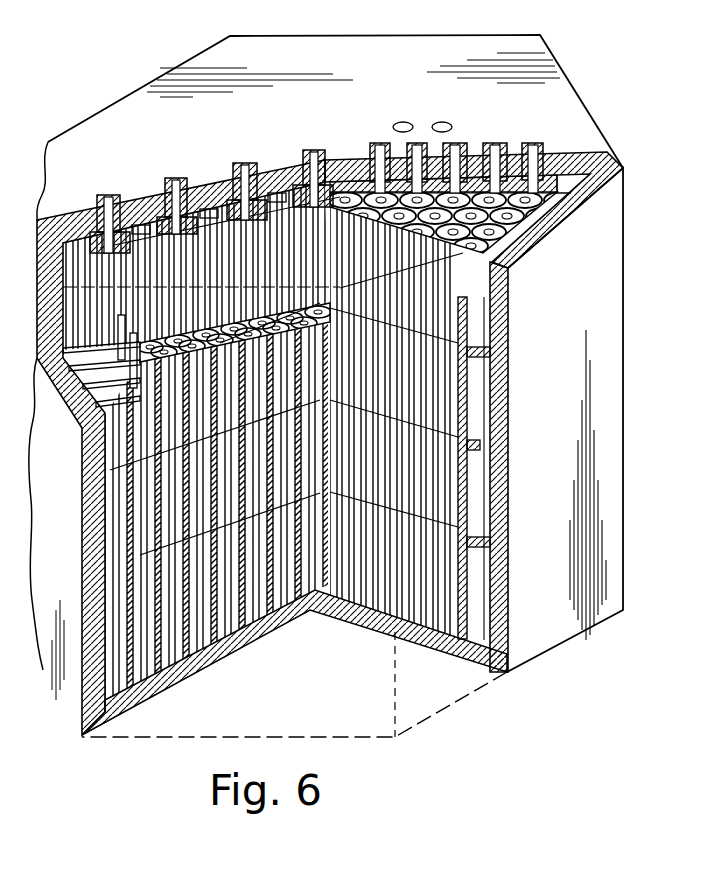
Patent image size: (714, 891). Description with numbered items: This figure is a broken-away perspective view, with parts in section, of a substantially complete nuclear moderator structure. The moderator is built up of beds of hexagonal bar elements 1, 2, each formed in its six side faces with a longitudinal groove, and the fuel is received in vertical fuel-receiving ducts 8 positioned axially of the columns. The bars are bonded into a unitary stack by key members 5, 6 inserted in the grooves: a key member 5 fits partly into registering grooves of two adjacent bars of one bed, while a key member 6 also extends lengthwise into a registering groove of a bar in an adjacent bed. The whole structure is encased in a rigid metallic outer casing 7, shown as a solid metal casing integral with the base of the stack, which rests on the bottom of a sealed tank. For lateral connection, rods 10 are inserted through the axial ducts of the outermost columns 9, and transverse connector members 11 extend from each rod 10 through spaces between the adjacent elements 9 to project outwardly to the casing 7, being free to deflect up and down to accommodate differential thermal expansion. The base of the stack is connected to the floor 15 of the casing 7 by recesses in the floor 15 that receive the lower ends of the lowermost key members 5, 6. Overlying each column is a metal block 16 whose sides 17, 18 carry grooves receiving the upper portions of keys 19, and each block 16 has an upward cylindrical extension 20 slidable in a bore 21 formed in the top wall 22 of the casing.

The bar element 1 is at (517, 262).
The bar element 2 is at (553, 241).
The key member 5 is at (527, 195).
The key member 6 is at (383, 636).
The outer casing 7 is at (84, 550).
The fuel-receiving duct 8 is at (476, 170).
The outermost column 9 is at (470, 391).
The rod 10 is at (467, 417).
The transverse connector member 11 is at (480, 452).
The floor 15 is at (258, 645).
The metal block 16 is at (82, 208).
The side of block 17 is at (437, 160).
The side of block 18 is at (445, 175).
The key 19 is at (515, 155).
The upward cylindrical extension 20 is at (302, 158).
The bore 21 is at (262, 168).
The top wall 22 is at (204, 188).